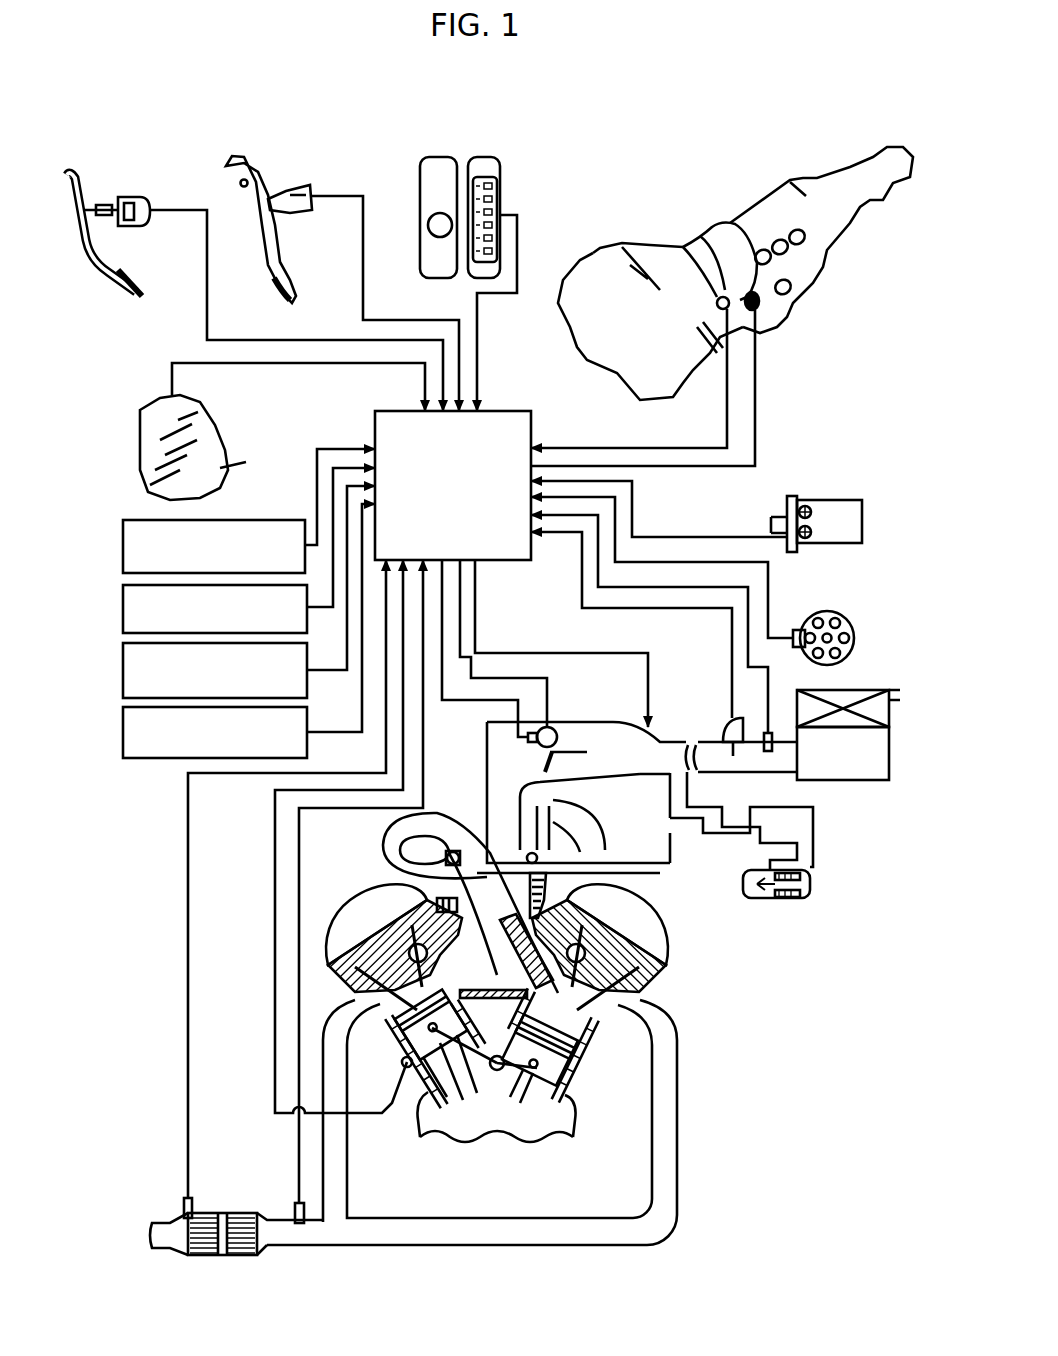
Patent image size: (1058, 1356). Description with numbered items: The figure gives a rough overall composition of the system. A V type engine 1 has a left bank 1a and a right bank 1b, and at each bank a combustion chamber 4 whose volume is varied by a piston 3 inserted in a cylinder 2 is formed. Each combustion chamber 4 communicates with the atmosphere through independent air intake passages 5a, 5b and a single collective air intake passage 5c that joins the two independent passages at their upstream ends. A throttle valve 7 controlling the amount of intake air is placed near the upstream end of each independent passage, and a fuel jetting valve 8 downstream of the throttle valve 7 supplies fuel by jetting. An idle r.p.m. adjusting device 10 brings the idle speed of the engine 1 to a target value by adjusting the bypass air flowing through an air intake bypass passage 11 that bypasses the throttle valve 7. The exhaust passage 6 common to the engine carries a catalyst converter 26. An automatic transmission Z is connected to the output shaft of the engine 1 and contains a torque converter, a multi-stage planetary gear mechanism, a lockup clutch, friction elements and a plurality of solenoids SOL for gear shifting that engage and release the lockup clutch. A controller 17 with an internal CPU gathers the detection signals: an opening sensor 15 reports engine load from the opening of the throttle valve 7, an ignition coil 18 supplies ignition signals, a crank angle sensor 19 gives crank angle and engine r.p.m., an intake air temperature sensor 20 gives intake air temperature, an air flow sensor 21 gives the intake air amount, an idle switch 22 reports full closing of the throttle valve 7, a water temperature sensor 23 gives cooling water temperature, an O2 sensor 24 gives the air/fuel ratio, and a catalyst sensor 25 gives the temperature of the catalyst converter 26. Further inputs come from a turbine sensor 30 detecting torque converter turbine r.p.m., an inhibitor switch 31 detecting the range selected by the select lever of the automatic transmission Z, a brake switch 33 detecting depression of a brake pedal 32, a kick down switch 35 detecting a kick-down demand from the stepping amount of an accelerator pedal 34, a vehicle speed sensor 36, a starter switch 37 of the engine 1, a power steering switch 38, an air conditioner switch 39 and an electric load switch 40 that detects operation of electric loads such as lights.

The V type engine 1 is at (504, 902).
The left bank 1a is at (342, 922).
The right bank 1b is at (665, 928).
The cylinder 2 is at (574, 1043).
The piston 3 is at (543, 1082).
The combustion chamber 4 is at (563, 1035).
The independent air intake passage 5a is at (392, 860).
The independent air intake passage 5b is at (593, 841).
The collective air intake passage 5c is at (835, 776).
The exhaust passage 6 is at (335, 1086).
The throttle valve 7 is at (553, 753).
The fuel jetting valve 8 is at (452, 850).
The idle r.p.m. adjusting device 10 is at (816, 882).
The air intake bypass passage 11 is at (645, 843).
The opening sensor 15 is at (536, 733).
The controller 17 is at (513, 563).
The ignition coil 18 is at (862, 520).
The crank angle sensor 19 is at (855, 638).
The intake air temperature sensor 20 is at (768, 752).
The air flow sensor 21 is at (712, 716).
The idle switch 22 is at (561, 643).
The water temperature sensor 23 is at (343, 852).
The O2 sensor 24 is at (305, 1225).
The catalyst sensor 25 is at (194, 1208).
The catalyst converter 26 is at (221, 1260).
The turbine sensor 30 is at (720, 298).
The inhibitor switch 31 is at (484, 146).
The brake pedal 32 is at (291, 284).
The brake switch 33 is at (300, 188).
The accelerator pedal 34 is at (96, 276).
The kick down switch 35 is at (130, 197).
The vehicle speed sensor 36 is at (260, 420).
The starter switch 37 is at (123, 547).
The power steering switch 38 is at (123, 609).
The air conditioner switch 39 is at (123, 670).
The electric load switch 40 is at (123, 732).
The automatic transmission Z is at (633, 222).
The solenoids SOL is at (760, 322).